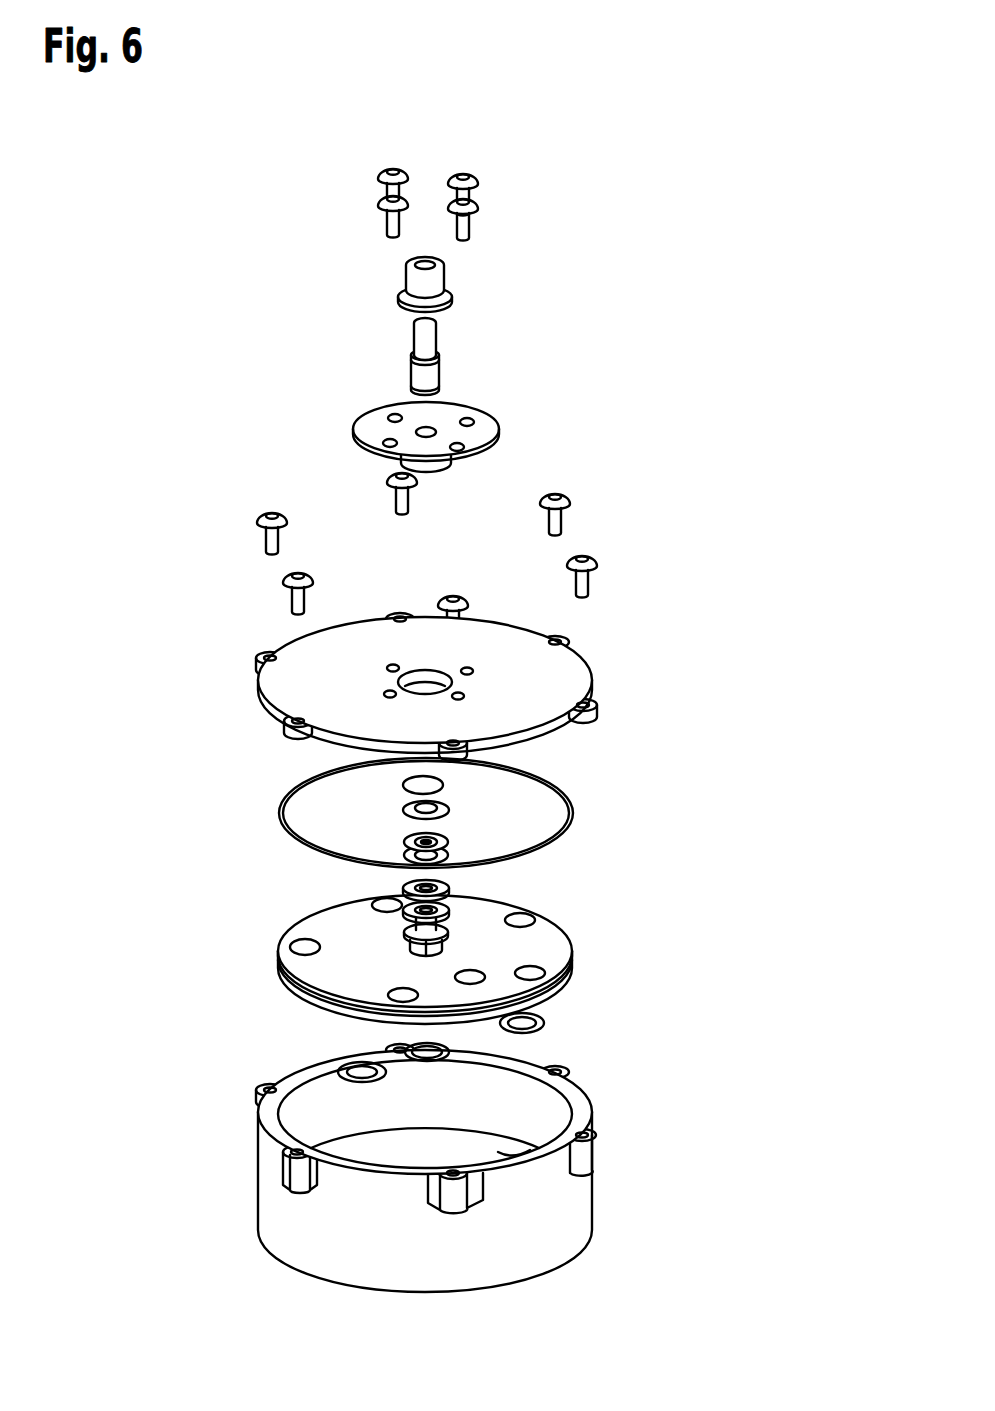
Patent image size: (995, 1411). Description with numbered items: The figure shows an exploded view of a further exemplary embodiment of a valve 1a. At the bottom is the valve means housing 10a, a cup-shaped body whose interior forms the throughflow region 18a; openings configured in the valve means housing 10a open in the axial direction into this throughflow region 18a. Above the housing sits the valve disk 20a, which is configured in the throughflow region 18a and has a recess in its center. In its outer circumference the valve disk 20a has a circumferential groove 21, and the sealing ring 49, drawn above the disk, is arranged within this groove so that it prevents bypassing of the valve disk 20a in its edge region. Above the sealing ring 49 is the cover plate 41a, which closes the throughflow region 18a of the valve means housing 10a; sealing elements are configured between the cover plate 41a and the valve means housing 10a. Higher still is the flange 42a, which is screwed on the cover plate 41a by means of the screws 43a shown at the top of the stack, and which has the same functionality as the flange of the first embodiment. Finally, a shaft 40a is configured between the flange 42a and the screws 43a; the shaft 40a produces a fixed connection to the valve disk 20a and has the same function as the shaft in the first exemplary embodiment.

The valve 1a is at (668, 181).
The valve means housing 10a is at (482, 1167).
The throughflow region 18a is at (530, 1118).
The valve disk 20a is at (555, 942).
The circumferential groove 21 is at (290, 982).
The shaft 40a is at (428, 372).
The cover plate 41a is at (572, 676).
The flange 42a is at (478, 435).
The screws 43a is at (458, 228).
The sealing ring 49 is at (565, 798).